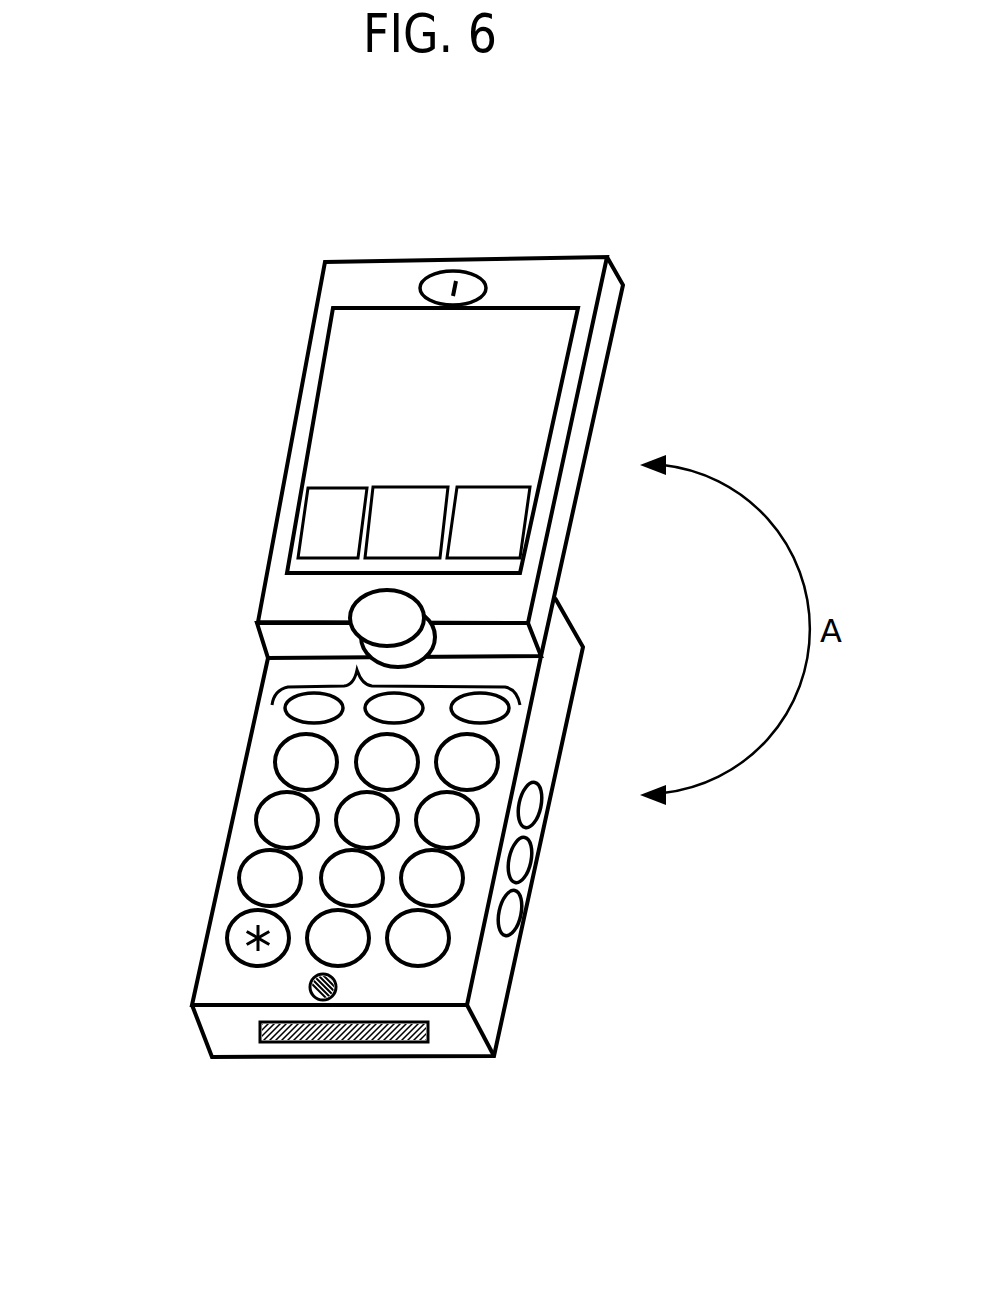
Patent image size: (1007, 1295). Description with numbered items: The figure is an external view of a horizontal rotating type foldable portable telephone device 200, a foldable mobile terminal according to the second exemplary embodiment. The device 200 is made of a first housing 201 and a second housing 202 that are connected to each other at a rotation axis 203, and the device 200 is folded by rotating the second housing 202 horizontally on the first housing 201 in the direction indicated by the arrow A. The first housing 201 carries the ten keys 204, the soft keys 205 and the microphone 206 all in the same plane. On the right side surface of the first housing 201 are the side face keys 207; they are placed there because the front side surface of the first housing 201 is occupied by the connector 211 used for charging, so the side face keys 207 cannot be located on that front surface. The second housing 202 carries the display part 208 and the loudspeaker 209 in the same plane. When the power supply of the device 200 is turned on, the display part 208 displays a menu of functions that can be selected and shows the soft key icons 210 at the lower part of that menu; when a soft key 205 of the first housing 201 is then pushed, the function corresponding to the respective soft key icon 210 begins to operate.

The foldable portable telephone device 200 is at (582, 185).
The first housing 201 is at (510, 985).
The second housing 202 is at (587, 360).
The rotation axis 203 is at (363, 588).
The ten keys 204 is at (258, 810).
The soft keys 205 is at (357, 668).
The microphone 206 is at (310, 985).
The side face keys 207 is at (563, 780).
The display part 208 is at (350, 362).
The loudspeaker 209 is at (470, 273).
The soft key icons 210 is at (298, 507).
The connector 211 is at (307, 1042).